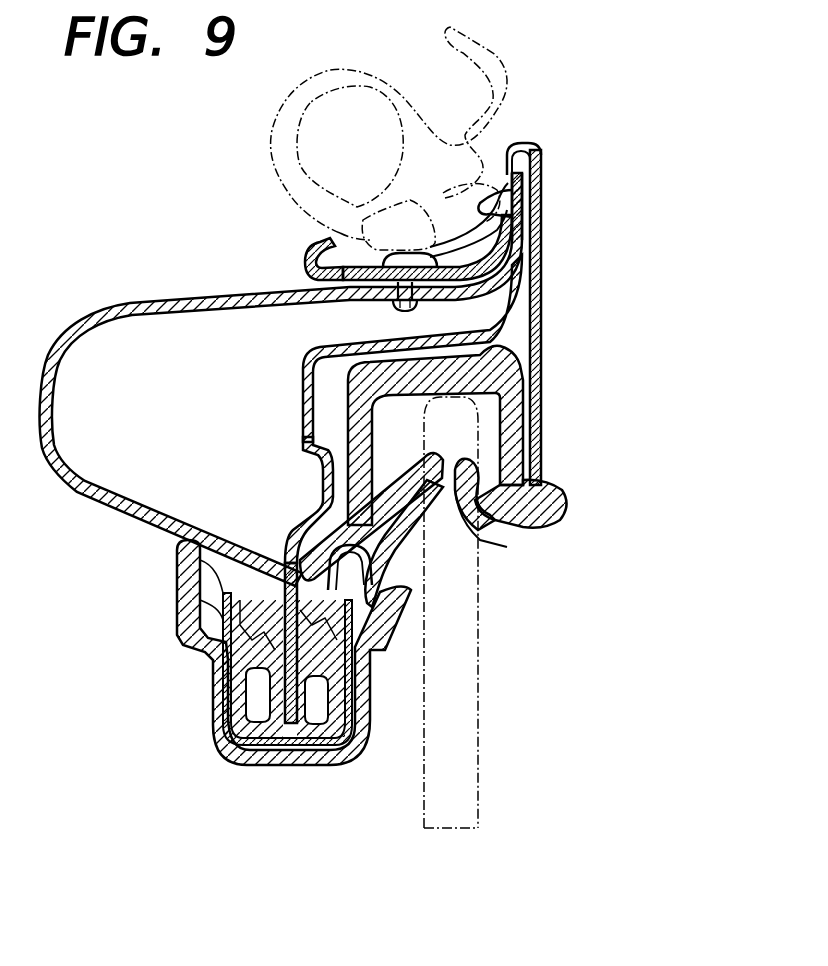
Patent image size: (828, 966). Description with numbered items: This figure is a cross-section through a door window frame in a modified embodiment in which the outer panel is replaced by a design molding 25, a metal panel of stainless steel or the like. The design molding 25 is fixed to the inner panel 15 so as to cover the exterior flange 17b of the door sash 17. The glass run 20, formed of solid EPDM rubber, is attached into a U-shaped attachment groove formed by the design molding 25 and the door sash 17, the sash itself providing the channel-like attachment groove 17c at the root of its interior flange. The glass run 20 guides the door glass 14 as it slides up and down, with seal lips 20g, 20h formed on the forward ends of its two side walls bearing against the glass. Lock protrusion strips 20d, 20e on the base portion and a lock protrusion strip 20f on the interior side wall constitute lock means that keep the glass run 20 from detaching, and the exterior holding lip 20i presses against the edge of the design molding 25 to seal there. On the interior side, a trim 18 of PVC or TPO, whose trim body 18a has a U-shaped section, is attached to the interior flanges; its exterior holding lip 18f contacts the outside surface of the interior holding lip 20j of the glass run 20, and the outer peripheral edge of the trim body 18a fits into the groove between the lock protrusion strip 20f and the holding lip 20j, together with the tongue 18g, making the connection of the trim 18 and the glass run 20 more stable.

The door glass 14 is at (480, 733).
The inner panel 15 is at (133, 303).
The door sash 17 is at (419, 307).
The exterior flange 17b is at (527, 257).
The attachment groove 17c is at (305, 385).
The trim 18 is at (270, 681).
The trim body 18a is at (307, 768).
The exterior holding lip 18f is at (393, 592).
The clip tongue 18g is at (287, 567).
The glass run 20 is at (419, 515).
The lock protrusion strip 20d is at (307, 445).
The lock protrusion strip 20e is at (530, 378).
The lock protrusion strip 20f is at (290, 547).
The seal lip 20g is at (463, 515).
The seal lip 20h is at (443, 510).
The exterior holding lip 20i is at (553, 503).
The interior holding lip 20j is at (400, 593).
The design molding 25 is at (541, 327).